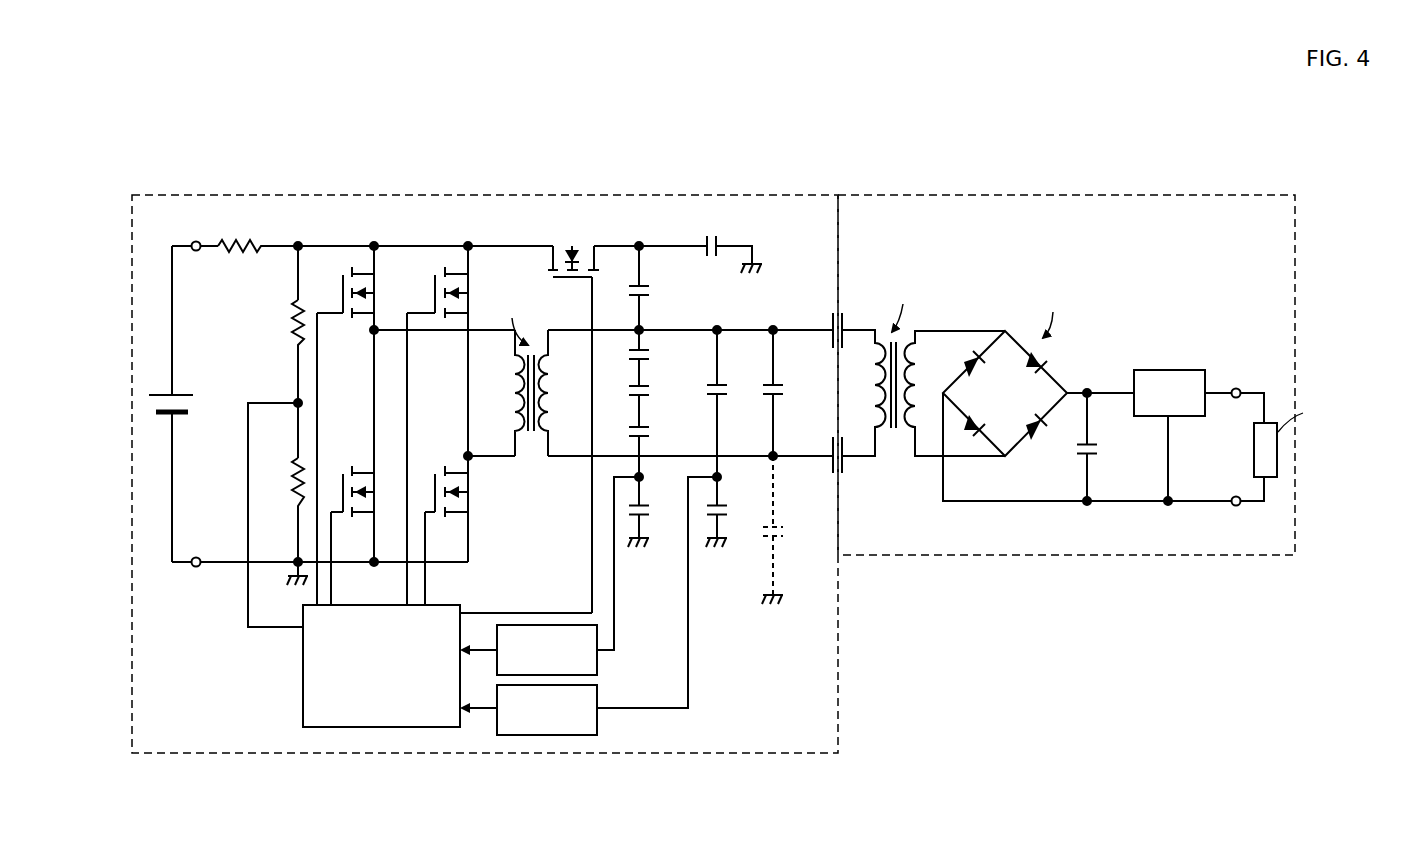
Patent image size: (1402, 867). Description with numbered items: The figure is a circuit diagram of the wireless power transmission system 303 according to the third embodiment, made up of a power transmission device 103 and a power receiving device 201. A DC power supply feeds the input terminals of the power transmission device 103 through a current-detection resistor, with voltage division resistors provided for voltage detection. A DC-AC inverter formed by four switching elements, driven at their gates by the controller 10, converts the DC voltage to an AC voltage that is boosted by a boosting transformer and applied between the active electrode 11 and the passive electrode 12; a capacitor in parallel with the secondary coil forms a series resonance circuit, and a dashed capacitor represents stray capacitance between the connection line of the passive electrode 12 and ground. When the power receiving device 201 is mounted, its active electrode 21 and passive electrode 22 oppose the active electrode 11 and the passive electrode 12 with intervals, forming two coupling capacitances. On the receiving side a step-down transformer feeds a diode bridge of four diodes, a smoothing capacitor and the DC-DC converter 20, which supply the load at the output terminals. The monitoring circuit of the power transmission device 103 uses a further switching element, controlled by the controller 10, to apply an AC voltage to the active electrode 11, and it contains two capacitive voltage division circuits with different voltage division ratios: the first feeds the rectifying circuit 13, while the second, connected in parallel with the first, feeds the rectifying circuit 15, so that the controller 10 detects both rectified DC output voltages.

The wireless power transmission system 303 is at (232, 152).
The power transmission device 103 is at (150, 195).
The power receiving device 201 is at (1156, 195).
The controller 10 is at (303, 692).
The rectifying circuit 13 is at (597, 664).
The rectifying circuit 15 is at (597, 724).
The active electrode 11 is at (829, 314).
The passive electrode 12 is at (829, 465).
The active electrode 21 is at (846, 314).
The passive electrode 22 is at (846, 465).
The DC-DC converter 20 is at (1177, 370).